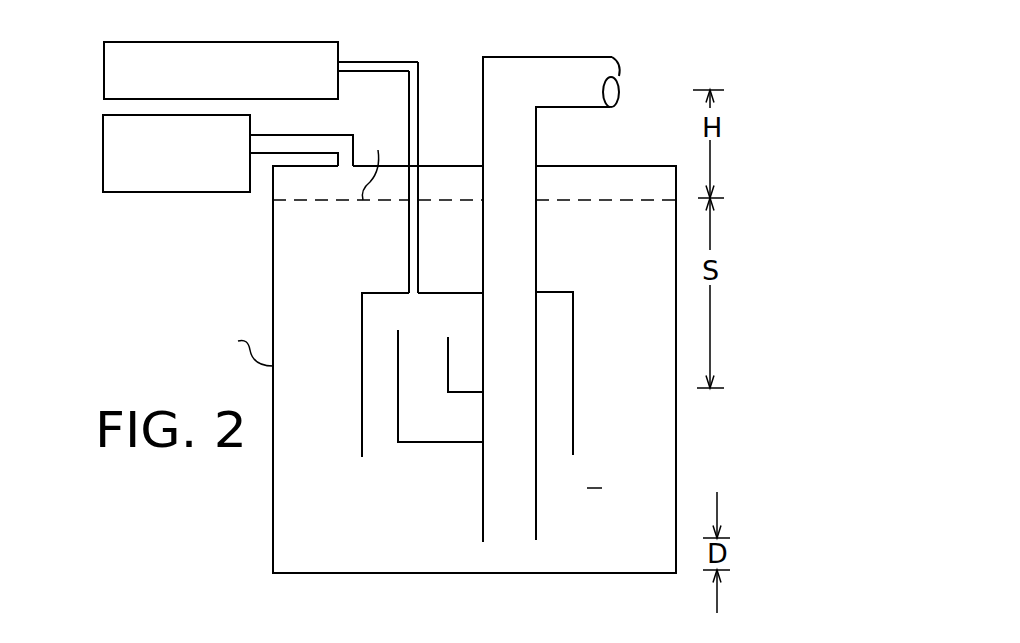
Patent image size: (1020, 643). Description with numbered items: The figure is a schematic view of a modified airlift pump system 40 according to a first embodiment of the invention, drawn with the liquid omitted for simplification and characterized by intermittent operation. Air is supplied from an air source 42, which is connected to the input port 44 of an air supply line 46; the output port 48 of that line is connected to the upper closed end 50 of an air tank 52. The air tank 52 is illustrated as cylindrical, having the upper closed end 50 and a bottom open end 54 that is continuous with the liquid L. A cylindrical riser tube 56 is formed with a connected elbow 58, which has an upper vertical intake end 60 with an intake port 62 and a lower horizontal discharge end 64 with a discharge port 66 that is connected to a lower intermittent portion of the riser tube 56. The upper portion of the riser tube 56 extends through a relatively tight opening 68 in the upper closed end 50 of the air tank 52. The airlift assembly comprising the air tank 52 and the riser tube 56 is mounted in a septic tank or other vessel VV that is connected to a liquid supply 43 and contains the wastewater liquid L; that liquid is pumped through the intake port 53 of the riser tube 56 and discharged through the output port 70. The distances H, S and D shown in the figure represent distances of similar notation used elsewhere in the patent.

The airlift pump system 40 is at (555, 42).
The air source 42 is at (104, 78).
The liquid supply 43 is at (195, 193).
The input port 44 is at (340, 62).
The air supply line 46 is at (420, 143).
The output port 48 is at (410, 295).
The upper closed end 50 is at (430, 293).
The air tank 52 is at (576, 371).
The intake port 53 is at (518, 542).
The bottom open end 54 is at (390, 444).
The riser tube 56 is at (538, 238).
The elbow 58 is at (451, 443).
The upper vertical intake end 60 is at (459, 338).
The intake port 62 is at (427, 328).
The lower horizontal discharge end 64 is at (468, 392).
The discharge port 66 is at (498, 416).
The opening 68 is at (538, 292).
The output port 70 is at (620, 72).